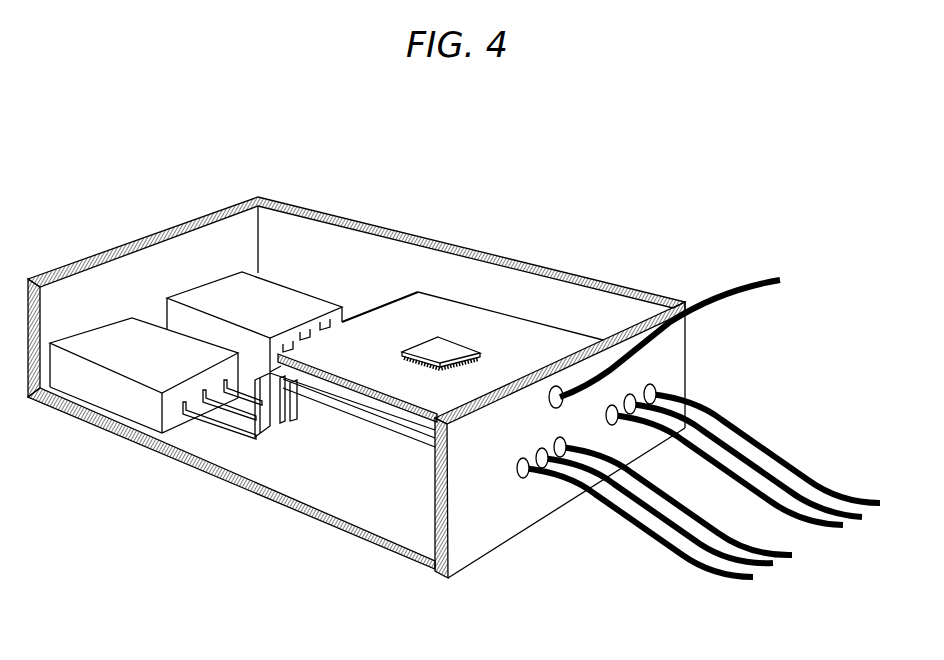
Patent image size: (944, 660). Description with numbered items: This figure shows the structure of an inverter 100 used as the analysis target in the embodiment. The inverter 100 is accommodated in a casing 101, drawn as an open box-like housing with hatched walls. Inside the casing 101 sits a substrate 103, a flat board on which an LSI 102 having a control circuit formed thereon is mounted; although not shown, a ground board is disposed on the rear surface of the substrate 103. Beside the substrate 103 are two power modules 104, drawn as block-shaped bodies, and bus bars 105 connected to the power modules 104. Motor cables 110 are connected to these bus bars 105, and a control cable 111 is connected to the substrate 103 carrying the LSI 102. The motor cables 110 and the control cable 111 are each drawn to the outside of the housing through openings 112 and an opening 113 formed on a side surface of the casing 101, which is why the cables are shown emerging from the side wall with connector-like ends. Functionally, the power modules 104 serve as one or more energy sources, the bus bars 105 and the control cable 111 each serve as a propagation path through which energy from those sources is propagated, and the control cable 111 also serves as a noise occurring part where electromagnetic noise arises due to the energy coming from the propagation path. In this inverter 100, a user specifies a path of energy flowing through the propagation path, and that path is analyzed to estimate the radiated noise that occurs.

The inverter 100 is at (341, 163).
The casing 101 is at (402, 226).
The LSI 102 is at (437, 338).
The substrate 103 is at (500, 333).
The power modules 104 is at (283, 300).
The bus bars 105 is at (333, 418).
The motor cables 110 is at (633, 528).
The control cable 111 is at (727, 294).
The openings 112 is at (656, 386).
The opening 113 is at (557, 386).